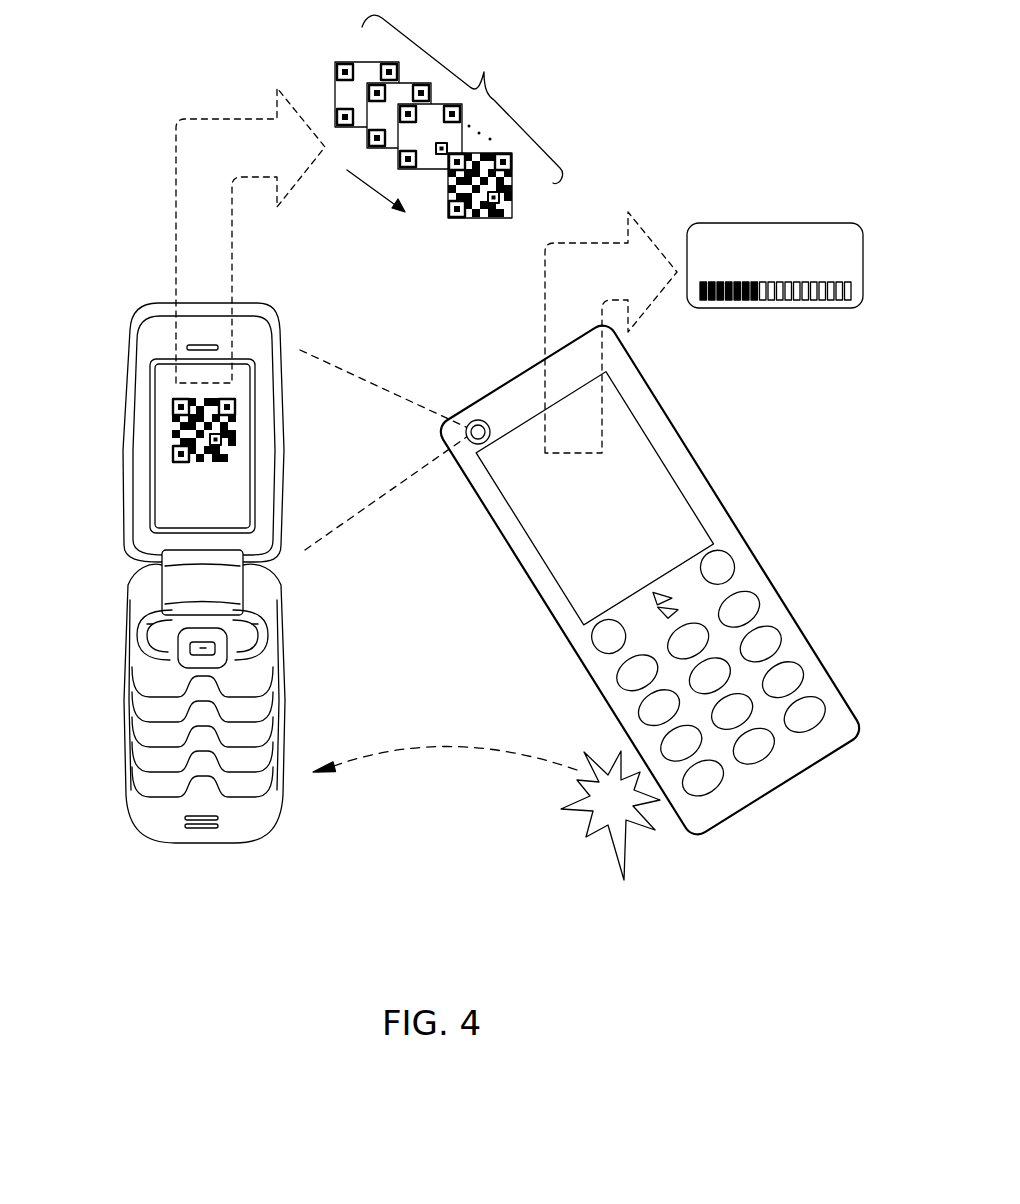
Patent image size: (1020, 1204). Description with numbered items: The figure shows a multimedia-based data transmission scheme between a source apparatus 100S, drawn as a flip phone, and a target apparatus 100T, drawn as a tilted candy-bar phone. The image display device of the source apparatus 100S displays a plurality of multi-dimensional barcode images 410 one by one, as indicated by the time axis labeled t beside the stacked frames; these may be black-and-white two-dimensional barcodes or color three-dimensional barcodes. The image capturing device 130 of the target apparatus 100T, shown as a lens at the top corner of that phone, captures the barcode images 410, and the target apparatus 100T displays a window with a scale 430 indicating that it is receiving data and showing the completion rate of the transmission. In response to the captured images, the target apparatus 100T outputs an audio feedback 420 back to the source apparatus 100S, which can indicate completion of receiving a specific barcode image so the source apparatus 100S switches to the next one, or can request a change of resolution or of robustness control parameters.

The source apparatus 100S is at (158, 303).
The target apparatus 100T is at (678, 432).
The image capturing device 130 is at (466, 430).
The multi-dimensional barcode images 410 is at (448, 116).
The audio feedback 420 is at (486, 802).
The receiving data indication 430 is at (730, 223).